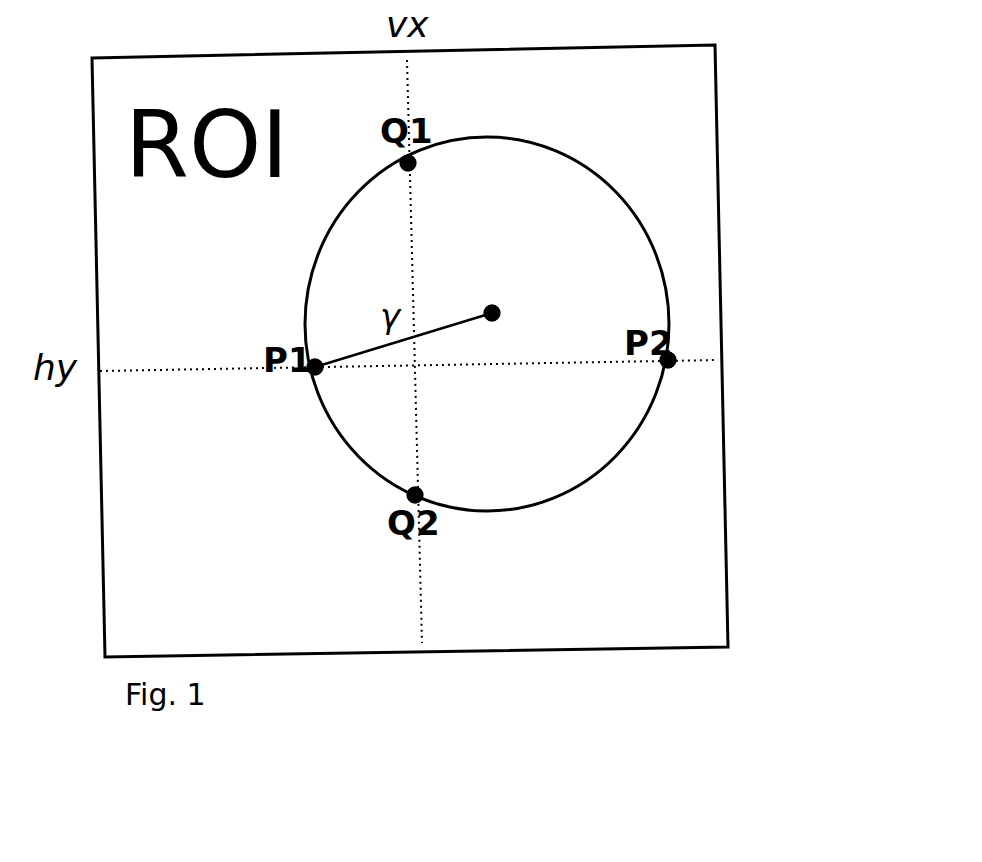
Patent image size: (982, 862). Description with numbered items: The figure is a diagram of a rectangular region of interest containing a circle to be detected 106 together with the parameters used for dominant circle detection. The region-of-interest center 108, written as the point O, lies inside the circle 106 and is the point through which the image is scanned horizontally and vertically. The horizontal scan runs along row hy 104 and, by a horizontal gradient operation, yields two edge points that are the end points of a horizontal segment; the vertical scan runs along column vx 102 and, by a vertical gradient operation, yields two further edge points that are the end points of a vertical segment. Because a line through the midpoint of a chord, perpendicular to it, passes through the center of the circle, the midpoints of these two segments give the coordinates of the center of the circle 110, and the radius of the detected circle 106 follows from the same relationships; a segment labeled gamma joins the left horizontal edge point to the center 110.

The column vx 102 is at (430, 623).
The row hy 104 is at (702, 358).
The circle to be detected 106 is at (662, 250).
The ROI center 108 is at (412, 367).
The center of the circle 110 is at (513, 328).